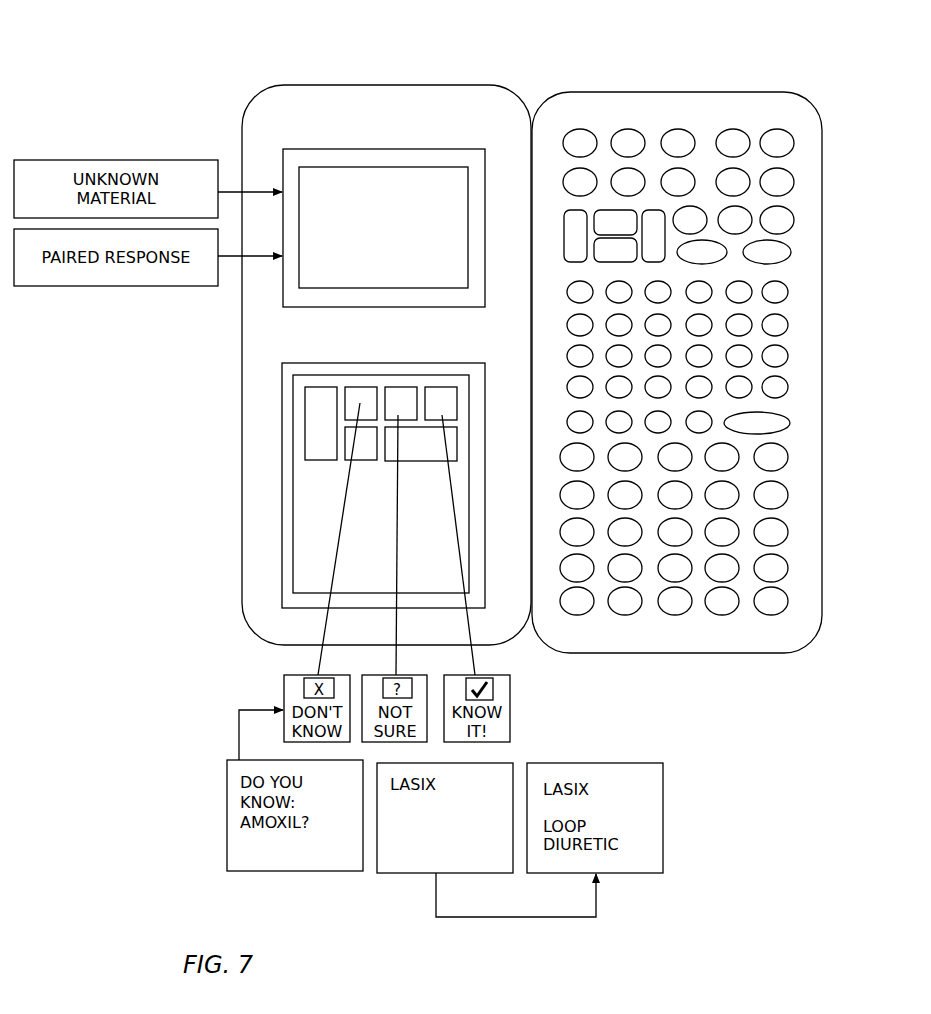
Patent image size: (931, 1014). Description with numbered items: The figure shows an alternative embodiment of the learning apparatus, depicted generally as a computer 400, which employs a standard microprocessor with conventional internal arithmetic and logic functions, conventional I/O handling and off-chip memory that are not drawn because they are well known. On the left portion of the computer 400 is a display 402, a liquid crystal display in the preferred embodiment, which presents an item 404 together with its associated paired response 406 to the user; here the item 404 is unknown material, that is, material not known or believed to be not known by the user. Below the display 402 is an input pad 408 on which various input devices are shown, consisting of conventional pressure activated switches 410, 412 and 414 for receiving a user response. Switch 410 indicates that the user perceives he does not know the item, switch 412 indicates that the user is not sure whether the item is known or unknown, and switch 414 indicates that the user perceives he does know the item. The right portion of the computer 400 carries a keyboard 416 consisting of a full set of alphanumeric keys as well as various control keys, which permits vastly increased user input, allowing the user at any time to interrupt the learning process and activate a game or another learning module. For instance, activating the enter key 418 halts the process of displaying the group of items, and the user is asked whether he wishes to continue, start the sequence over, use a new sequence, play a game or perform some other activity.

The computer 400 is at (530, 108).
The display 402 is at (445, 195).
The item 404 is at (315, 190).
The paired response 406 is at (309, 253).
The input pad 408 is at (310, 512).
The switch 410 is at (367, 387).
The switch 412 is at (403, 387).
The switch 414 is at (445, 387).
The keyboard 416 is at (808, 312).
The enter key 418 is at (790, 424).